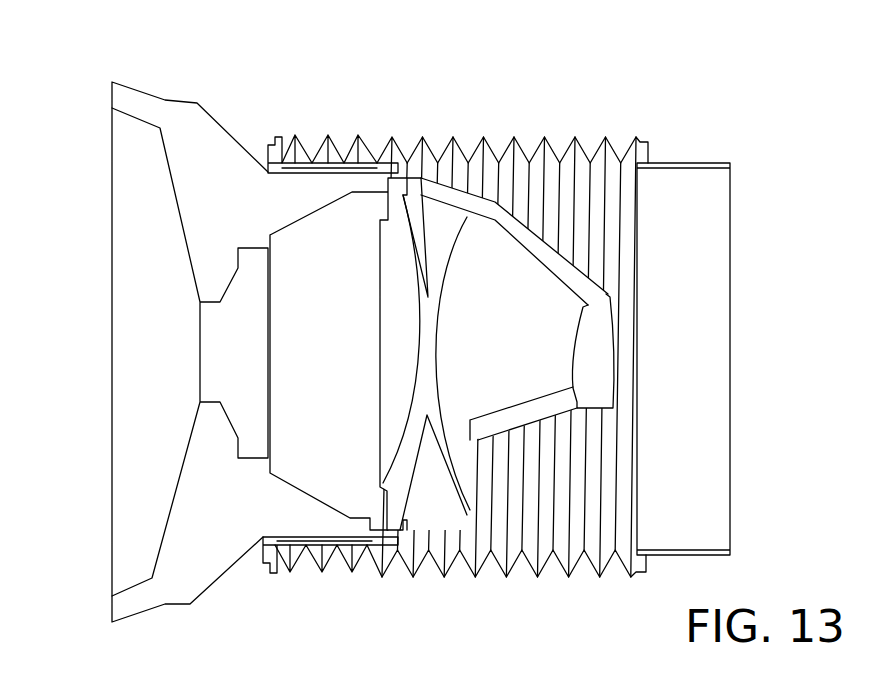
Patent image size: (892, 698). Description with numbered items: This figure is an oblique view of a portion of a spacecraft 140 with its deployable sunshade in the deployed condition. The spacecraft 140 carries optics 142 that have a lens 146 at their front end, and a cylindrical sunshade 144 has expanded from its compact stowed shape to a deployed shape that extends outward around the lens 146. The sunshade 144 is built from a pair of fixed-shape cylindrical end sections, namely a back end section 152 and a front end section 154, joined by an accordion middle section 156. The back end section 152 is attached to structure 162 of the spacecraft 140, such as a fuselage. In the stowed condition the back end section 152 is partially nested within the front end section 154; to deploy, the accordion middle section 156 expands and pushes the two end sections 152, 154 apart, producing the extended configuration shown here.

The spacecraft 140 is at (122, 68).
The structure 162 is at (197, 165).
The back end section 152 is at (268, 147).
The cylindrical sunshade 144 is at (507, 313).
The accordion middle section 156 is at (402, 145).
The optics 142 is at (513, 225).
The lens 146 is at (605, 353).
The front end section 154 is at (687, 175).